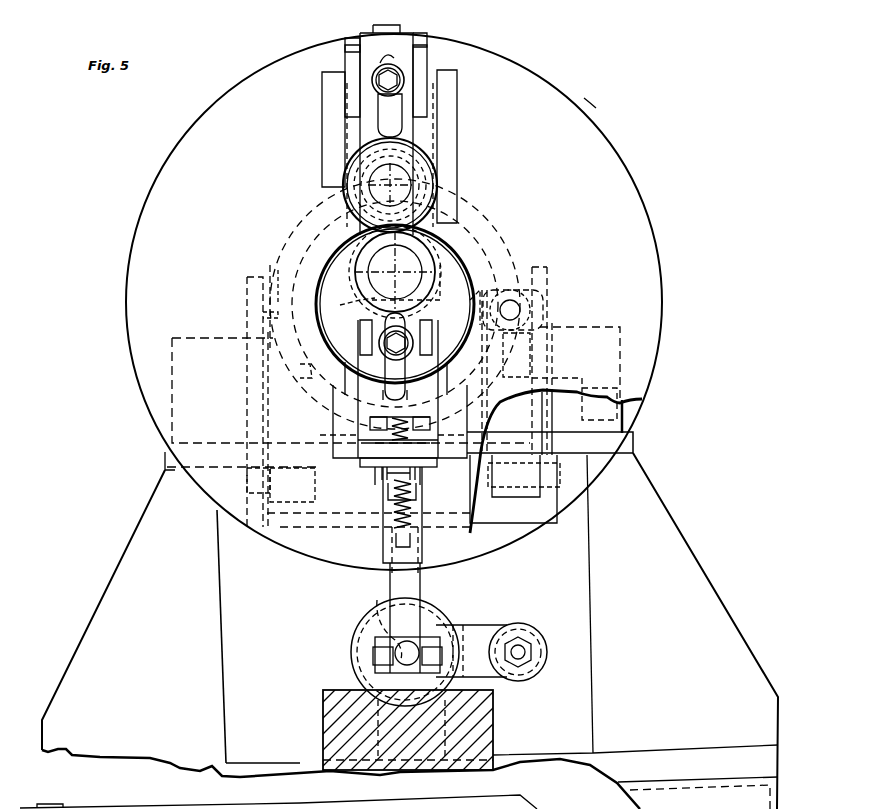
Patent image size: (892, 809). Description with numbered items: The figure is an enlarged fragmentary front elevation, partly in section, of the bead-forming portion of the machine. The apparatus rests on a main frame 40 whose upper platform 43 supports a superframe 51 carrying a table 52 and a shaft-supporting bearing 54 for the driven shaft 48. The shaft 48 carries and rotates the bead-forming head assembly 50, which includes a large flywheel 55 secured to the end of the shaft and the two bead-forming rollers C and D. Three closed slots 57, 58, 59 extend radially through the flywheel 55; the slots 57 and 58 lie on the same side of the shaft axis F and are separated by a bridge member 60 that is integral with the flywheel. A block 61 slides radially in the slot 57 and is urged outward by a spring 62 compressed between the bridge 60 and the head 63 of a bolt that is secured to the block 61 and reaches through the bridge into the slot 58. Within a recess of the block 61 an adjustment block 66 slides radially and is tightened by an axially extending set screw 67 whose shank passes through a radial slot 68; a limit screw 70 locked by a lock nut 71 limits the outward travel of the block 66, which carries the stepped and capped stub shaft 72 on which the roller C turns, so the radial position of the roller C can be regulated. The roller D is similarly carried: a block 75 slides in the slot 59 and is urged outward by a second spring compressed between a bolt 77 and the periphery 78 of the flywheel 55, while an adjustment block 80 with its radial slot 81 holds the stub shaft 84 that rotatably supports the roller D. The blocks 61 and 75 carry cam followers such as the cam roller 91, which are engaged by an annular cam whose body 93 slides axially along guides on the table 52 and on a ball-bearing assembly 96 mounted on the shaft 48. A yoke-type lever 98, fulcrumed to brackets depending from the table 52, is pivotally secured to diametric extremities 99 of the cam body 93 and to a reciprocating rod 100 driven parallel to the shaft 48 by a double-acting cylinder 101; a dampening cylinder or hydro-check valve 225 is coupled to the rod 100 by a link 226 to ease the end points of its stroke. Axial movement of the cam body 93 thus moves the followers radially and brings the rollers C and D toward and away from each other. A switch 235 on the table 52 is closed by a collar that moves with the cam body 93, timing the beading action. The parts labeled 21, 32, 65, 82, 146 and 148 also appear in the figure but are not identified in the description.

The bead-forming head assembly 50 is at (648, 203).
The flywheel 55 is at (578, 108).
The superframe 51 is at (128, 552).
The table 52 is at (636, 432).
The main frame 40 is at (572, 745).
The upper platform 43 is at (284, 762).
The reciprocating rod 100 is at (395, 615).
The cylinder 101 is at (364, 630).
The link 226 is at (482, 630).
The dampening cylinder 225 is at (548, 644).
The slot 58 is at (422, 546).
The limit screw 70 is at (396, 544).
The spring 62 is at (418, 494).
The bolt head 63 is at (388, 497).
The lock nut 71 is at (420, 473).
The bridge member 60 is at (380, 468).
The slot 57 is at (428, 410).
The yoke-type lever 98 is at (247, 277).
The diametric extremities 99 is at (263, 315).
The cam roller 91 is at (310, 490).
The switch 235 is at (573, 378).
The idler shaft 32 is at (460, 292).
The belt 21 is at (478, 280).
The bead-forming roller C is at (345, 270).
The cam body 93 is at (312, 200).
The shaft-supporting bearing 54 is at (304, 250).
The stub shaft 72 is at (395, 272).
The shaft 48 is at (446, 305).
The shaft axis F is at (352, 297).
The adjustment block 66 is at (425, 352).
The set screw 67 is at (370, 340).
The side plate 65 is at (370, 380).
The block 61 is at (428, 388).
The radial slot 68 is at (363, 416).
The ball-bearing assembly 96 is at (301, 371).
The roller D is at (428, 168).
The stub shaft 84 is at (390, 185).
The block 75 is at (422, 126).
The slot 59 is at (428, 60).
The bolt 77 is at (398, 26).
The periphery 78 is at (352, 36).
The adjustment block 80 is at (418, 38).
The radial slot 81 is at (384, 62).
The clamp bolt 82 is at (392, 80).
The base member 146 is at (508, 804).
The base member 148 is at (460, 804).